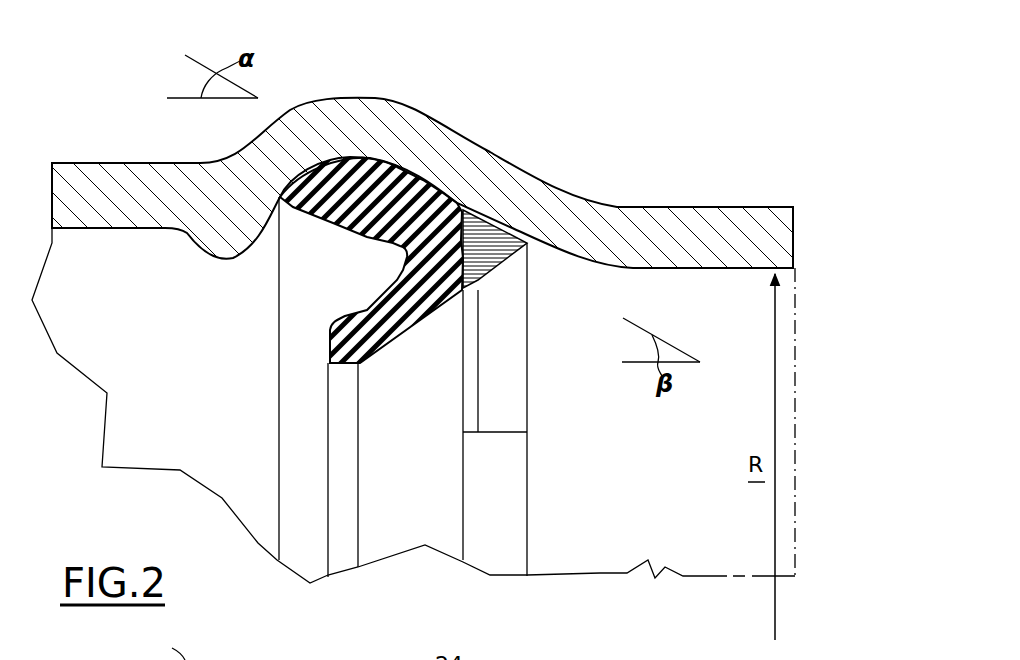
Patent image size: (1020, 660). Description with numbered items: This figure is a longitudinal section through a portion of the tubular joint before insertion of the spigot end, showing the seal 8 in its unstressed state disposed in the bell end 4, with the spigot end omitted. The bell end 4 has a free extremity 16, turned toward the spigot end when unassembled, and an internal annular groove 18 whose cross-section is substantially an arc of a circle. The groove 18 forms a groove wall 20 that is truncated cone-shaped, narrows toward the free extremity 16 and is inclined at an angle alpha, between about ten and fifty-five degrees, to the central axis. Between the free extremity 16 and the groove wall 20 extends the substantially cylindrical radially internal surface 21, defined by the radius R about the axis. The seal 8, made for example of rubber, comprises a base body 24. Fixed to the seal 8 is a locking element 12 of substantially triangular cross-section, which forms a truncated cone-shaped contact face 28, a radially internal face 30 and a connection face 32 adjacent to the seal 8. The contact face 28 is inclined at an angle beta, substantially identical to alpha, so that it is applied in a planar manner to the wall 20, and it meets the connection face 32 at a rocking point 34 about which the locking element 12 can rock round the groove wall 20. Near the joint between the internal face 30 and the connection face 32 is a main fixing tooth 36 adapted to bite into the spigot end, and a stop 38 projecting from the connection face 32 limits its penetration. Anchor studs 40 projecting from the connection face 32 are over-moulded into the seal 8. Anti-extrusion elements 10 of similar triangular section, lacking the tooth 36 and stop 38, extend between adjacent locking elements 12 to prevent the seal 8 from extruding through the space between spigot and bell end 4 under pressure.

The bell end 4 is at (137, 80).
The seal 8 is at (433, 434).
The anti-extrusion element 10 is at (498, 545).
The locking element 12 is at (489, 406).
The free extremity 16 is at (800, 233).
The internal annular groove 18 is at (267, 235).
The groove wall 20 is at (397, 243).
The radially internal surface 21 is at (691, 274).
The base body 24 is at (417, 180).
The contact face 28 is at (514, 226).
The radially internal face 30 is at (498, 273).
The connection face 32 is at (404, 264).
The rocking point 34 is at (516, 209).
The main fixing tooth 36 is at (478, 298).
The stop 38 is at (445, 276).
The anchor stud 40 is at (460, 208).